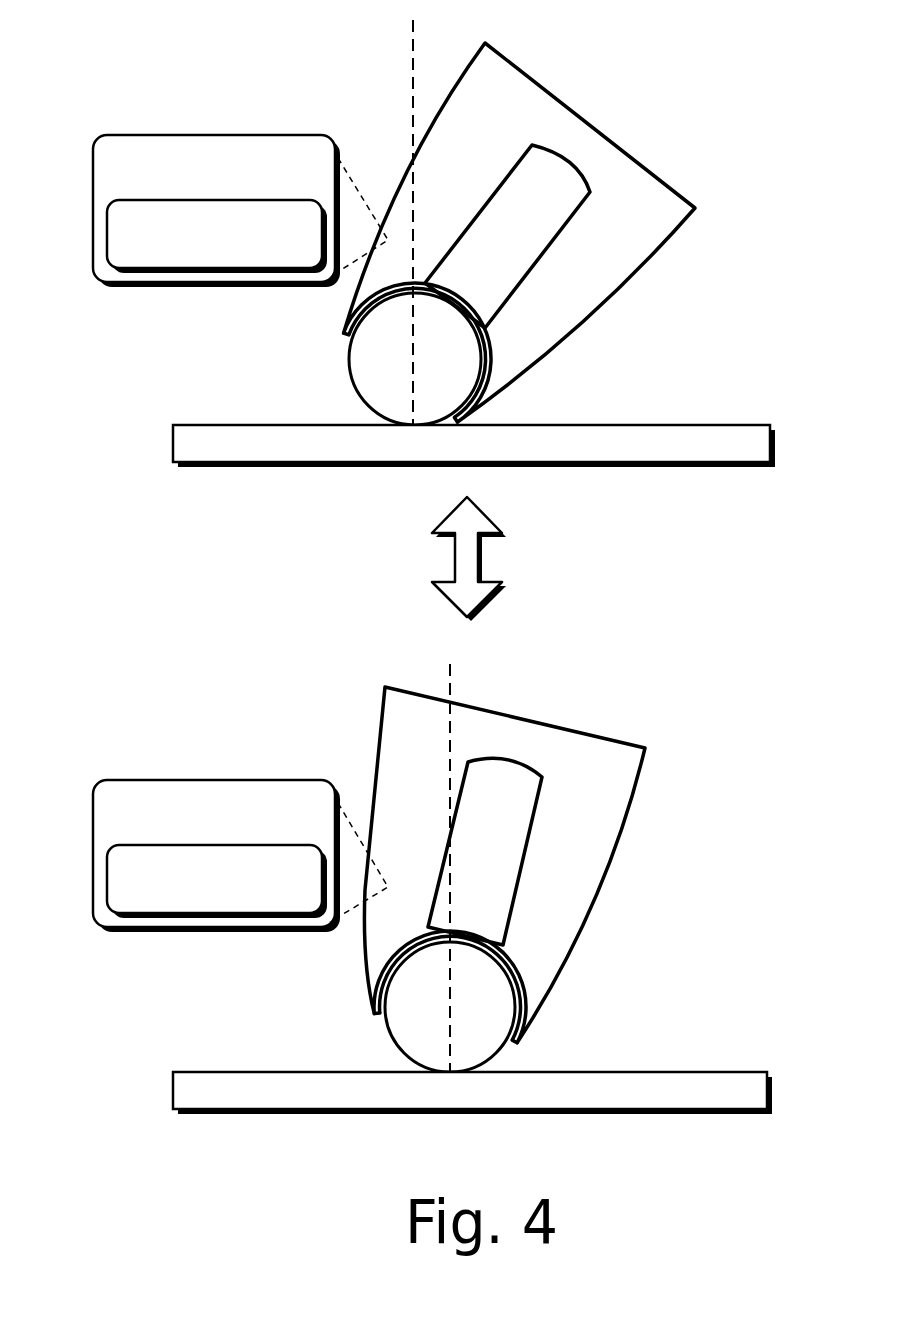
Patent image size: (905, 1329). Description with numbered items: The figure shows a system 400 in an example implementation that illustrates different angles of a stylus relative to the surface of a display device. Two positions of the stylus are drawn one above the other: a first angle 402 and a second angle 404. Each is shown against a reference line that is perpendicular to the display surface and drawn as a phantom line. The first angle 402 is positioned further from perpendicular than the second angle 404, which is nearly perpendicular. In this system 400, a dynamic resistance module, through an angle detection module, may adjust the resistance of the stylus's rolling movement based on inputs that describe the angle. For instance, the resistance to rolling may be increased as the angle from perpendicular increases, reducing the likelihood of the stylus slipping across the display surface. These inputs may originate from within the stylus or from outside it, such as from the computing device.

The system 400 is at (182, 62).
The first angle 402 is at (716, 112).
The second angle 404 is at (681, 740).